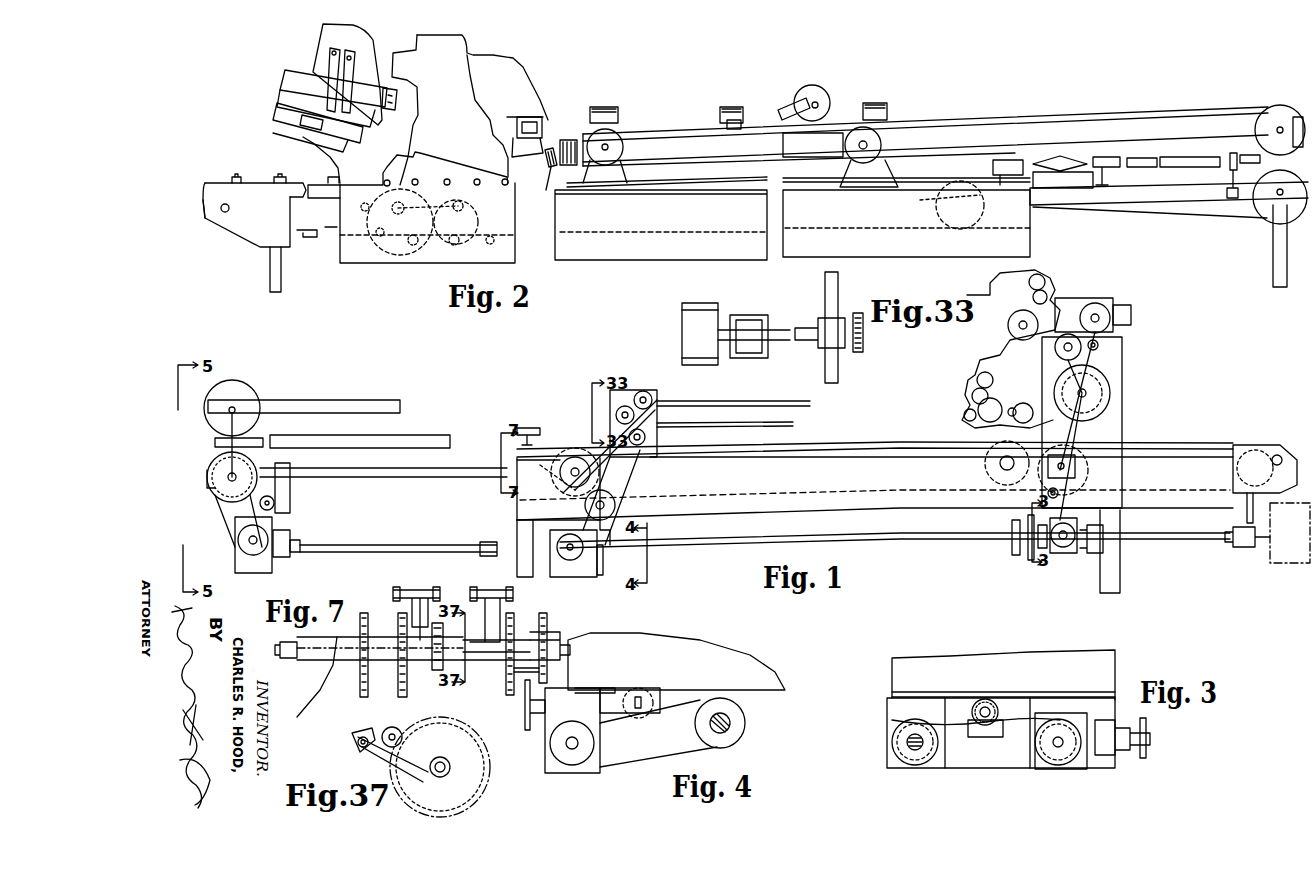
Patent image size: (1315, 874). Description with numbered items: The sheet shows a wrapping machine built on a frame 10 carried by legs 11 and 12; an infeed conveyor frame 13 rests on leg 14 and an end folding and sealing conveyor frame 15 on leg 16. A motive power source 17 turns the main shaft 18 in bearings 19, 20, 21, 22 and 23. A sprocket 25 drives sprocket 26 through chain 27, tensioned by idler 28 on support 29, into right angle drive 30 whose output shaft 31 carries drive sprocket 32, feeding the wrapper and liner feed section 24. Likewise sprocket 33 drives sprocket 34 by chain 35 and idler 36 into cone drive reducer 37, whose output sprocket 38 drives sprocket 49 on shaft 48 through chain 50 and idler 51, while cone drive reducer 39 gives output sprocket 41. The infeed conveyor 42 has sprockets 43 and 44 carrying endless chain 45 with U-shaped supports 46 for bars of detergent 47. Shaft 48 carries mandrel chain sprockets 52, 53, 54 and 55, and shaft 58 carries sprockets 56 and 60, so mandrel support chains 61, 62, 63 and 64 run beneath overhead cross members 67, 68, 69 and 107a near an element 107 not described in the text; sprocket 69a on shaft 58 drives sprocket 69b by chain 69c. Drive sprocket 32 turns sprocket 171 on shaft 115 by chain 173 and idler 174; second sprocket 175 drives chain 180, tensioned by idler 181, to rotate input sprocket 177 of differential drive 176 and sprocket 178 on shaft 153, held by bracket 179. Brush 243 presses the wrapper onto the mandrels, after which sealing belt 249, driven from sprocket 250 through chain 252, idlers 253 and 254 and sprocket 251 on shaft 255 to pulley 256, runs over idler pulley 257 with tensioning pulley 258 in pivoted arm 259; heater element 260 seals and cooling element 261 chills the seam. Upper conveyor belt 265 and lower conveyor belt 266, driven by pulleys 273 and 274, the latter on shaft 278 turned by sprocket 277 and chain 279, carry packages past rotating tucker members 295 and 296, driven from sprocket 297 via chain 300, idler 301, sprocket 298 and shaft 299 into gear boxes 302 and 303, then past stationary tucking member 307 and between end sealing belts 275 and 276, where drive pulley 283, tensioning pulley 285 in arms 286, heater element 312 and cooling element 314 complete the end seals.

In FIG. 2, the frame 10 is at (660, 255).
In FIG. 1, the frame 10 is at (760, 510).
In FIG. 4, the frame 10 is at (666, 668).
In FIG. 3, the frame 10 is at (1010, 690).
In FIG. 1, the leg 11 is at (517, 548).
In FIG. 1, the leg 12 is at (1120, 575).
In FIG. 2, the infeed conveyor frame 13 is at (252, 236).
In FIG. 1, the infeed conveyor frame 13 is at (1240, 485).
In FIG. 2, the leg 14 is at (272, 268).
In FIG. 1, the leg 14 is at (1245, 512).
In FIG. 2, the end folding and sealing conveyor frame 15 is at (1168, 198).
In FIG. 1, the end folding and sealing conveyor frame 15 is at (368, 477).
In FIG. 2, the leg 16 is at (1275, 240).
In FIG. 1, the leg 16 is at (288, 517).
In FIG. 1, the motive power source 17 is at (1300, 536).
In FIG. 1, the main shaft 18 is at (728, 549).
In FIG. 4, the main shaft 18 is at (730, 727).
In FIG. 3, the main shaft 18 is at (910, 758).
In FIG. 1, the bearing 19 is at (1238, 545).
In FIG. 1, the bearing 20 is at (1095, 555).
In FIG. 1, the bearing 21 is at (1018, 560).
In FIG. 1, the bearing 22 is at (608, 550).
In FIG. 1, the bearing 23 is at (298, 558).
In FIG. 2, the wrapper and liner feed section 24 is at (322, 47).
In FIG. 1, the wrapper and liner feed section 24 is at (1060, 282).
In FIG. 3, the sprocket 25 is at (900, 745).
In FIG. 1, the sprocket 26 is at (1012, 527).
In FIG. 3, the sprocket 26 is at (1068, 765).
In FIG. 3, the chain 27 is at (975, 770).
In FIG. 3, the idler 28 is at (985, 698).
In FIG. 3, the support 29 is at (985, 737).
In FIG. 1, the right angle drive 30 is at (1052, 555).
In FIG. 3, the right angle drive 30 is at (1088, 768).
In FIG. 3, the output shaft 31 is at (1130, 735).
In FIG. 1, the drive sprocket 32 is at (1063, 552).
In FIG. 3, the drive sprocket 32 is at (1148, 733).
In FIG. 4, the sprocket 33 is at (740, 716).
In FIG. 1, the sprocket 34 is at (600, 580).
In FIG. 4, the sprocket 34 is at (572, 766).
In FIG. 4, the chain 35 is at (652, 762).
In FIG. 4, the idler 36 is at (640, 715).
In FIG. 1, the cone drive reducer 37 is at (562, 574).
In FIG. 4, the cone drive reducer 37 is at (548, 765).
In FIG. 1, the output sprocket 38 is at (570, 562).
In FIG. 4, the output sprocket 38 is at (527, 715).
In FIG. 1, the cone drive reducer 39 is at (250, 572).
In FIG. 1, the output sprocket 41 is at (240, 545).
In FIG. 2, the infeed conveyor 42 is at (235, 175).
In FIG. 1, the infeed conveyor 42 is at (1200, 440).
In FIG. 2, the sprocket 43 is at (207, 222).
In FIG. 1, the sprocket 43 is at (1278, 440).
In FIG. 2, the sprocket 44 is at (450, 245).
In FIG. 1, the sprocket 44 is at (985, 465).
In FIG. 2, the endless chain 45 is at (332, 233).
In FIG. 1, the endless chain 45 is at (1175, 490).
In FIG. 2, the supports 46 is at (226, 180).
In FIG. 2, the bars of detergent 47 is at (278, 176).
In FIG. 2, the shaft 48 is at (935, 216).
In FIG. 1, the shaft 48 is at (565, 458).
In FIG. 7, the shaft 48 is at (350, 662).
In FIG. 1, the sprocket 49 is at (517, 505).
In FIG. 1, the chain 50 is at (620, 483).
In FIG. 1, the idler 51 is at (612, 498).
In FIG. 2, the mandrel chain sprocket 52 is at (922, 200).
In FIG. 7, the mandrel chain sprocket 52 is at (360, 695).
In FIG. 7, the mandrel chain sprocket 53 is at (400, 692).
In FIG. 7, the mandrel chain sprocket 54 is at (506, 692).
In FIG. 7, the mandrel chain sprocket 55 is at (548, 673).
In FIG. 2, the mandrel chain sprocket 56 is at (385, 250).
In FIG. 2, the shaft 58 is at (398, 250).
In FIG. 1, the shaft 58 is at (1078, 470).
In FIG. 1, the mandrel chain sprocket 60 is at (1100, 440).
In FIG. 2, the mandrel support chain 61 is at (600, 232).
In FIG. 7, the mandrel support chain 61 is at (372, 612).
In FIG. 7, the mandrel support chain 62 is at (396, 622).
In FIG. 7, the mandrel support chain 63 is at (515, 620).
In FIG. 1, the mandrel support chain 64 is at (805, 490).
In FIG. 7, the mandrel support chain 64 is at (548, 626).
In FIG. 2, the overhead cross member 67 is at (606, 106).
In FIG. 2, the overhead cross member 68 is at (733, 105).
In FIG. 2, the overhead cross member 69 is at (878, 100).
In FIG. 2, the sprocket 69a is at (412, 262).
In FIG. 2, the sprocket 69b is at (478, 248).
In FIG. 2, the chain 69c is at (440, 172).
In FIG. 2, the housing 107 is at (517, 72).
In FIG. 2, the overhead cross member 107a is at (548, 118).
In FIG. 1, the shaft 115 is at (1090, 394).
In FIG. 1, the shaft 153 is at (1005, 322).
In FIG. 1, the sprocket 171 is at (1112, 382).
In FIG. 1, the chain 173 is at (1100, 500).
In FIG. 1, the idler 174 is at (1045, 494).
In FIG. 1, the second sprocket 175 is at (1112, 370).
In FIG. 1, the differential drive 176 is at (1115, 300).
In FIG. 1, the input sprocket 177 is at (1118, 325).
In FIG. 1, the sprocket 178 is at (1035, 355).
In FIG. 1, the bracket 179 is at (1010, 360).
In FIG. 1, the chain 180 is at (1010, 285).
In FIG. 1, the idler 181 is at (1060, 360).
In FIG. 2, the brush 243 is at (548, 172).
In FIG. 2, the sealing belt 249 is at (835, 122).
In FIG. 33, the sealing belt 249 is at (682, 308).
In FIG. 1, the sealing belt 249 is at (745, 400).
In FIG. 1, the sprocket 250 is at (598, 468).
In FIG. 33, the sprocket 251 is at (860, 350).
In FIG. 1, the sprocket 251 is at (648, 415).
In FIG. 1, the chain 252 is at (590, 430).
In FIG. 1, the idler 253 is at (648, 392).
In FIG. 1, the idler 254 is at (647, 437).
In FIG. 2, the shaft 255 is at (868, 143).
In FIG. 33, the shaft 255 is at (842, 303).
In FIG. 1, the shaft 255 is at (627, 405).
In FIG. 2, the pulley 256 is at (840, 148).
In FIG. 33, the pulley 256 is at (682, 333).
In FIG. 2, the idler pulley 257 is at (620, 140).
In FIG. 2, the pulley 258 is at (815, 95).
In FIG. 2, the pivoted arm 259 is at (782, 110).
In FIG. 2, the heater element 260 is at (675, 158).
In FIG. 2, the cooling element 261 is at (735, 158).
In FIG. 2, the upper conveyor belt 265 is at (1165, 110).
In FIG. 2, the lower conveyor belt 266 is at (1205, 212).
In FIG. 2, the pulley 273 is at (1270, 108).
In FIG. 1, the pulley 273 is at (245, 384).
In FIG. 2, the pulley 274 is at (1288, 280).
In FIG. 1, the pulley 274 is at (208, 486).
In FIG. 2, the end sealing belt 275 is at (1108, 172).
In FIG. 1, the end sealing belt 276 is at (350, 440).
In FIG. 1, the sprocket 277 is at (222, 500).
In FIG. 1, the shaft 278 is at (228, 476).
In FIG. 1, the chain 279 is at (236, 527).
In FIG. 2, the drive pulley 283 is at (1297, 112).
In FIG. 2, the tensioning pulley 285 is at (1255, 170).
In FIG. 2, the arms 286 is at (1228, 172).
In FIG. 2, the rotating tucker member 295 is at (1008, 158).
In FIG. 1, the rotating tucker member 295 is at (407, 545).
In FIG. 1, the rotating tucker member 296 is at (530, 427).
In FIG. 37, the sprocket 297 is at (478, 786).
In FIG. 37, the sprocket 298 is at (355, 747).
In FIG. 7, the shaft 299 is at (450, 612).
In FIG. 37, the shaft 299 is at (356, 742).
In FIG. 37, the chain 300 is at (375, 760).
In FIG. 37, the idler 301 is at (418, 727).
In FIG. 7, the right angle gear box 302 is at (425, 668).
In FIG. 7, the right angle gear box 303 is at (505, 672).
In FIG. 2, the stationary tucking member 307 is at (1046, 163).
In FIG. 2, the heater element 312 is at (1141, 170).
In FIG. 2, the cooling element 314 is at (1183, 170).